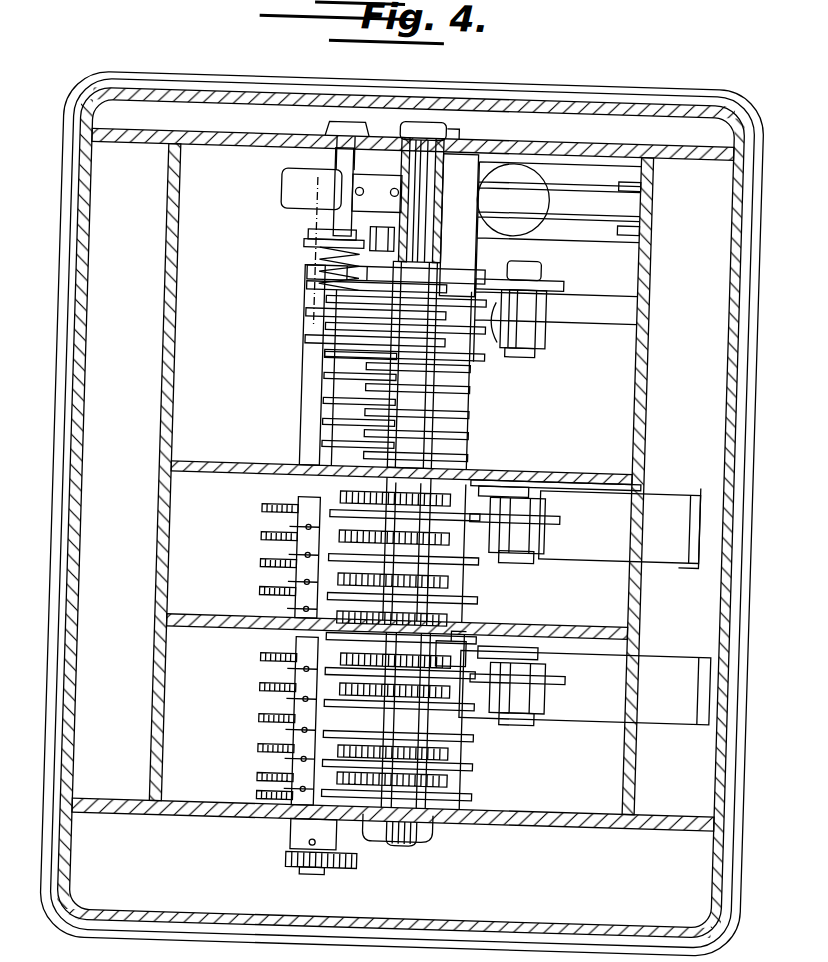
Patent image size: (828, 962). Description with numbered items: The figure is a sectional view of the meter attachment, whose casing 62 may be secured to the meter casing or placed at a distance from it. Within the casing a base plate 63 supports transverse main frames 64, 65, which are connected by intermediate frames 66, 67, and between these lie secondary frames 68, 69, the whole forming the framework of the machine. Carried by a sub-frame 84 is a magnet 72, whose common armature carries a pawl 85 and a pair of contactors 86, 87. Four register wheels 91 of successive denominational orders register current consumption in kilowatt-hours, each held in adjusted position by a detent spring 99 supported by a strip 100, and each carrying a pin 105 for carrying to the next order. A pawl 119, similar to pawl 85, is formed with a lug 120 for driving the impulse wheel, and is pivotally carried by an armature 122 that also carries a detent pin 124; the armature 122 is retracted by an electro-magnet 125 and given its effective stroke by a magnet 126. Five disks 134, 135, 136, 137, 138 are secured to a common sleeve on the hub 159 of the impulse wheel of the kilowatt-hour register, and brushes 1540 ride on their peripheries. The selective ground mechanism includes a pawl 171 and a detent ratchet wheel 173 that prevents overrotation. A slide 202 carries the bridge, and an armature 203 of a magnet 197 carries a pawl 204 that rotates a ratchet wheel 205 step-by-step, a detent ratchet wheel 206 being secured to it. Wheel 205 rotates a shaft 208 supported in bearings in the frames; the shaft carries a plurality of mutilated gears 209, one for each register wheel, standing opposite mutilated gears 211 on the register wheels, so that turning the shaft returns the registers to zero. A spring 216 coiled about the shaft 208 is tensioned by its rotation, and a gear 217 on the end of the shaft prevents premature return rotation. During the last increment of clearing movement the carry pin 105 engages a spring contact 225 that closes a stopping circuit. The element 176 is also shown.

The casing 62 is at (735, 478).
The base plate 63 is at (120, 470).
The transverse main frame 64 is at (128, 808).
The transverse main frame 65 is at (128, 150).
The intermediate frame 66 is at (162, 276).
The intermediate frame 67 is at (644, 372).
The secondary frame 68 is at (196, 468).
The secondary frame 69 is at (582, 624).
The magnet 72 is at (620, 527).
The sub-frame 84 is at (700, 536).
The pawl 85 is at (536, 516).
The contactor 86 is at (514, 484).
The contactor 87 is at (560, 478).
The register wheel 91 is at (480, 616).
The detent spring 99 is at (480, 594).
The strip 100 is at (466, 424).
The pin 105 is at (380, 838).
The pawl 119 is at (483, 670).
The lug 120 is at (465, 620).
The armature 122 is at (550, 686).
The detent pin 124 is at (470, 650).
The electro-magnet 125 is at (602, 712).
The magnet 126 is at (484, 720).
The disk 134 is at (466, 457).
The disk 135 is at (466, 436).
The disk 136 is at (466, 413).
The disk 137 is at (466, 389).
The disk 138 is at (466, 368).
The hub 159 is at (399, 549).
The pawl 171 is at (482, 282).
The detent ratchet wheel 173 is at (425, 280).
The lever stack 176 is at (298, 298).
The magnet 197 is at (513, 200).
The slide 202 is at (378, 229).
The armature 203 is at (570, 210).
The pawl 204 is at (296, 247).
The ratchet wheel 205 is at (312, 258).
The detent ratchet wheel 206 is at (300, 238).
The shaft 208 is at (326, 172).
The gear 209 is at (262, 595).
The gear 211 is at (480, 568).
The spring 216 is at (300, 274).
The gear 217 is at (368, 864).
The spring contact 225 is at (298, 530).
The brush 1540 is at (320, 392).